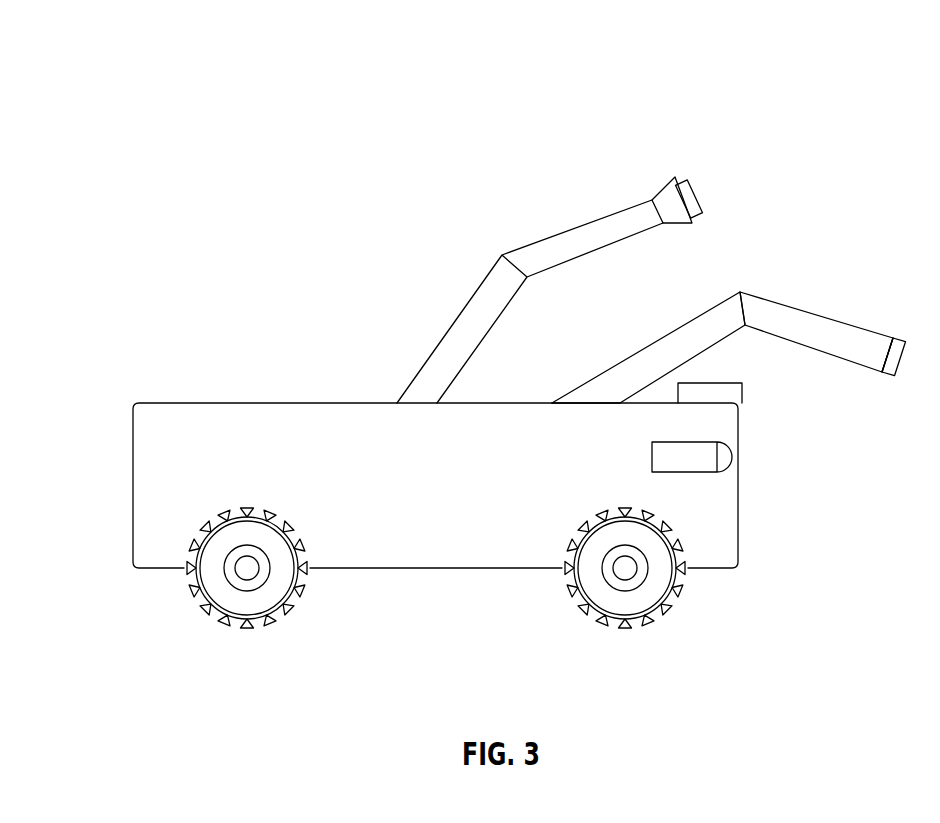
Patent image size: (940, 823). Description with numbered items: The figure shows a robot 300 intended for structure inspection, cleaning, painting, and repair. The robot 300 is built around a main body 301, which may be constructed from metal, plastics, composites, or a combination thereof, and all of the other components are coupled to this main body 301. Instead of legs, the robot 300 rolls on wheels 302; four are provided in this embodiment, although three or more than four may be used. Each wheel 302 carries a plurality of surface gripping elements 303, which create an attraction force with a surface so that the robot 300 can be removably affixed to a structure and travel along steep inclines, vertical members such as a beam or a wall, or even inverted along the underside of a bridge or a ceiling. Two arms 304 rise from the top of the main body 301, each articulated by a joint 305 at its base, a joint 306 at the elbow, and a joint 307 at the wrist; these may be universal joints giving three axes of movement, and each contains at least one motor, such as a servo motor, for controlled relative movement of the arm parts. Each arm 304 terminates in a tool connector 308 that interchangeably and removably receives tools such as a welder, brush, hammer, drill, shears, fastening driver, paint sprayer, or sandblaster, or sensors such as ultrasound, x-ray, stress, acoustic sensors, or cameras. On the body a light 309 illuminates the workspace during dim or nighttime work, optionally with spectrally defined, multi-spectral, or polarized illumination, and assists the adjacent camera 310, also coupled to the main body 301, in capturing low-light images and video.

The robot 300 is at (211, 58).
The main body 301 is at (147, 444).
The wheel 302 is at (193, 587).
The surface gripping element 303 is at (213, 615).
The arm 304 is at (466, 304).
The joint 305 is at (548, 402).
The joint 306 is at (747, 325).
The joint 307 is at (877, 373).
The tool connector 308 is at (668, 197).
The light 309 is at (708, 460).
The camera 310 is at (720, 395).